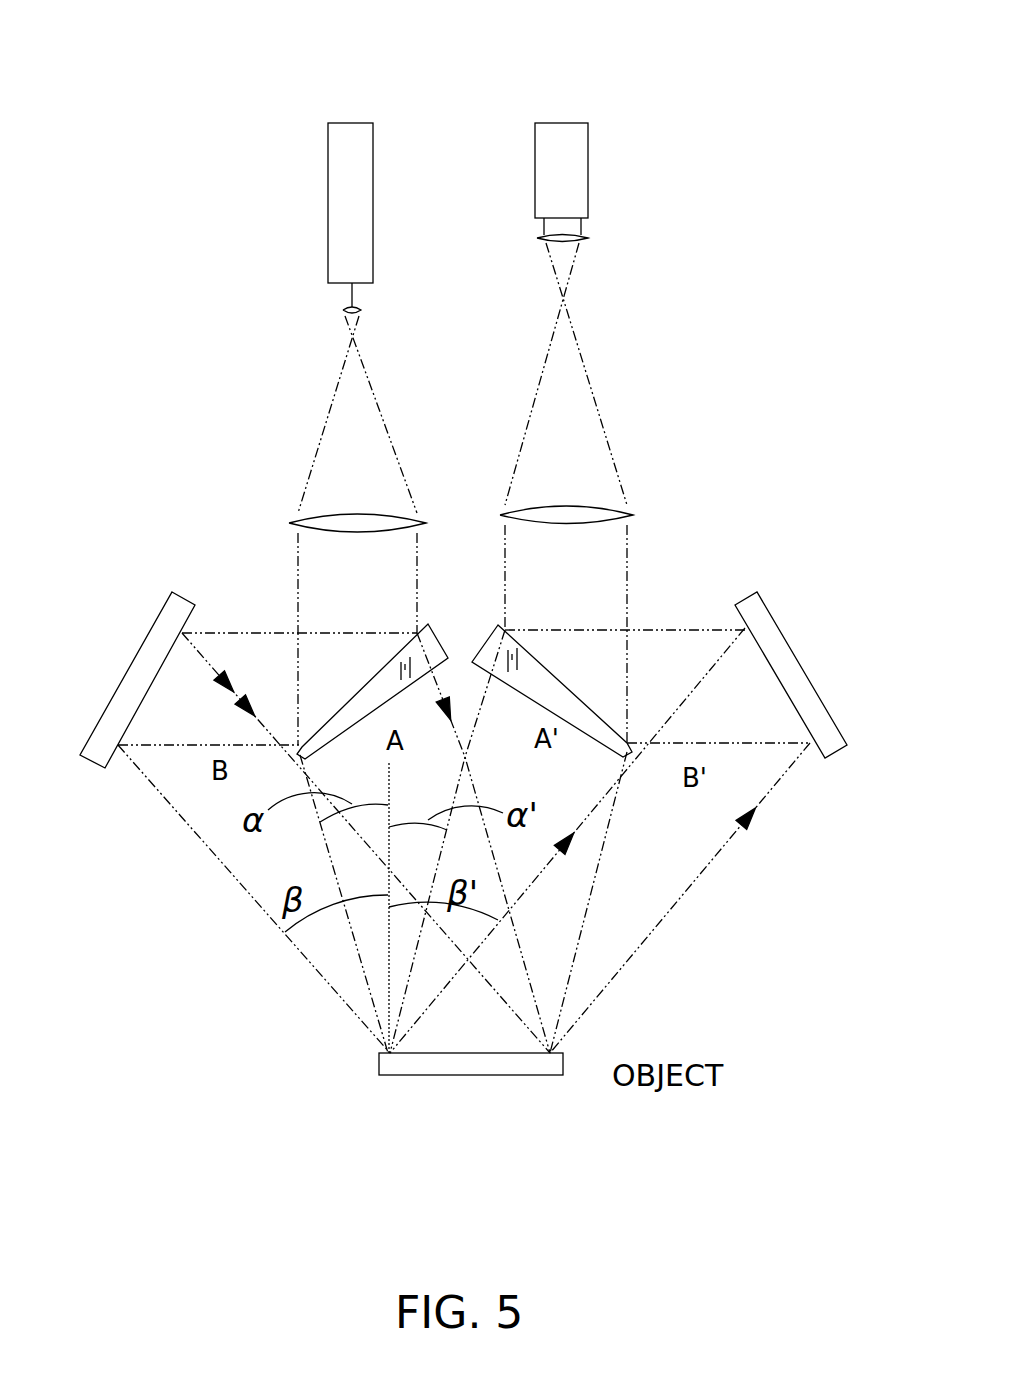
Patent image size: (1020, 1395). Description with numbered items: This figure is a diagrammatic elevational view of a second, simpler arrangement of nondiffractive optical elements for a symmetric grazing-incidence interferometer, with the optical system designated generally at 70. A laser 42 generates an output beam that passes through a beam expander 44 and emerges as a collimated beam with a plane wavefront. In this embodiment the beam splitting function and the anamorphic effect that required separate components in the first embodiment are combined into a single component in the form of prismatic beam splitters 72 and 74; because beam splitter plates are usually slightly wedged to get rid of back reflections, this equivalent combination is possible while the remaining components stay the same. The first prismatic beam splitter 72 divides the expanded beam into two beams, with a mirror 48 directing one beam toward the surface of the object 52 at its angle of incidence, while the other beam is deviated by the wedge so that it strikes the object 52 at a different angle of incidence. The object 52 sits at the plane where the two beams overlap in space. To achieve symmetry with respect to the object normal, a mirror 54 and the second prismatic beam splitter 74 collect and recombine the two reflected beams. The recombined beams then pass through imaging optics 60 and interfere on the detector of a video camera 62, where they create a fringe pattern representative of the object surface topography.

The optical system 70 is at (505, 60).
The laser 42 is at (328, 188).
The video camera 62 is at (588, 178).
The beam expander 44 is at (320, 515).
The imaging optics 60 is at (610, 505).
The mirror 48 is at (138, 650).
The mirror 54 is at (787, 637).
The prismatic beam splitter 72 is at (377, 672).
The prismatic beam splitter 74 is at (575, 697).
The object 52 is at (405, 1075).